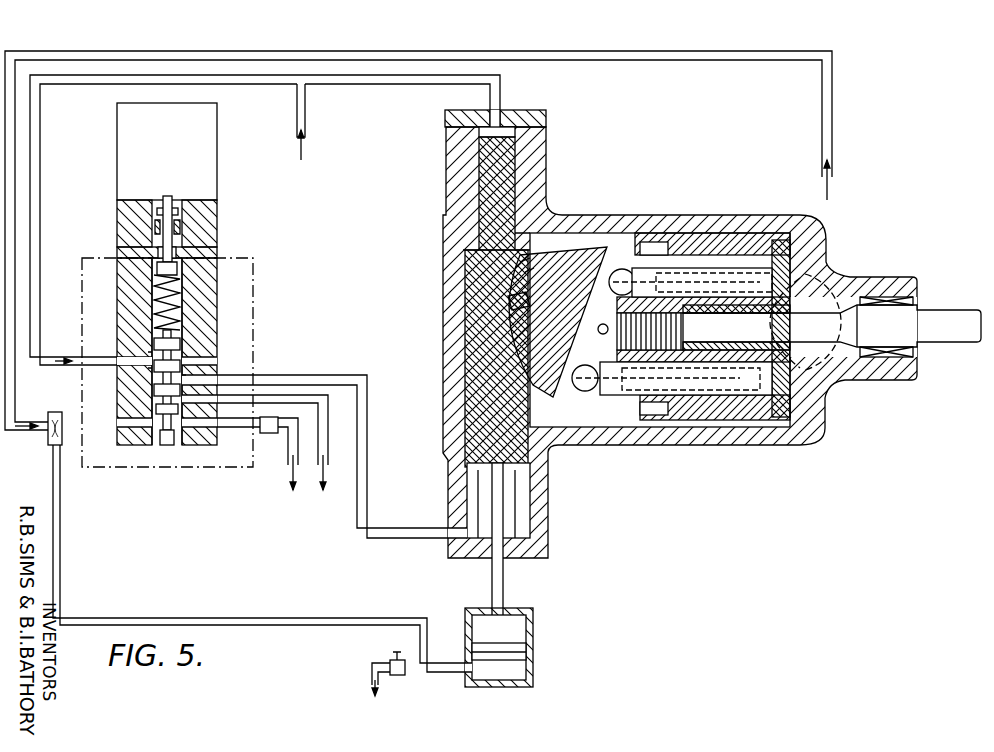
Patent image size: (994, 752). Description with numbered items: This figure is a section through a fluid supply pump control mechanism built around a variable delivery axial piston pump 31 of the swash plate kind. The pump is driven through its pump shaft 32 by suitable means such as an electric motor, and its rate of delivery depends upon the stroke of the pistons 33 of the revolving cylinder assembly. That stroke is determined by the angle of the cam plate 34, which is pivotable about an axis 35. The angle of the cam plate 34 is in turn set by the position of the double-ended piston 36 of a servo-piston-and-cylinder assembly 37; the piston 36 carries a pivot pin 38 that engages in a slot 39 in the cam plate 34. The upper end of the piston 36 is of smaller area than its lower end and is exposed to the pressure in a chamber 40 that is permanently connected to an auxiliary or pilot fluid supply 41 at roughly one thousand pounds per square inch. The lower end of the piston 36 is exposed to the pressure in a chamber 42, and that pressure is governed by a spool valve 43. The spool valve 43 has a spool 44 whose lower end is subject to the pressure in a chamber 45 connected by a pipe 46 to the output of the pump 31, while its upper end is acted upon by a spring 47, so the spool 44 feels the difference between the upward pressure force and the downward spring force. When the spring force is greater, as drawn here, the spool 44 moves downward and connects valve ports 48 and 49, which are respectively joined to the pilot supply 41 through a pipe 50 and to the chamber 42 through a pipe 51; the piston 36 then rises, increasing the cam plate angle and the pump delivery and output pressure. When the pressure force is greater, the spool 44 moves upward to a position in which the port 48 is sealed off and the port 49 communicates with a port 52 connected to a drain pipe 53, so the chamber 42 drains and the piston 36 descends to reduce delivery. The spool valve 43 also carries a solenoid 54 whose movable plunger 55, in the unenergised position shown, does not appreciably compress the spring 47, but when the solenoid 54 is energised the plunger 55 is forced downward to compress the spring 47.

The variable delivery axial piston pump 31 is at (762, 229).
The pump shaft 32 is at (950, 332).
The pistons 33 is at (710, 268).
The cam plate 34 is at (588, 278).
The axis 35 is at (599, 333).
The double-ended piston 36 is at (478, 264).
The servo-piston-and-cylinder assembly 37 is at (490, 397).
The pivot pin 38 is at (508, 300).
The slot 39 is at (528, 296).
The chamber 40 is at (502, 132).
The auxiliary or pilot fluid supply 41 is at (307, 109).
The chamber 42 is at (482, 508).
The spool valve 43 is at (245, 300).
The spool 44 is at (152, 372).
The chamber 45 is at (167, 430).
The pipe 46 is at (68, 432).
The spring 47 is at (157, 293).
The valve port 48 is at (152, 352).
The valve port 49 is at (185, 380).
The pipe 50 is at (40, 366).
The pipe 51 is at (298, 380).
The port 52 is at (185, 396).
The drain pipe 53 is at (330, 430).
The solenoid 54 is at (208, 143).
The movable plunger 55 is at (167, 206).